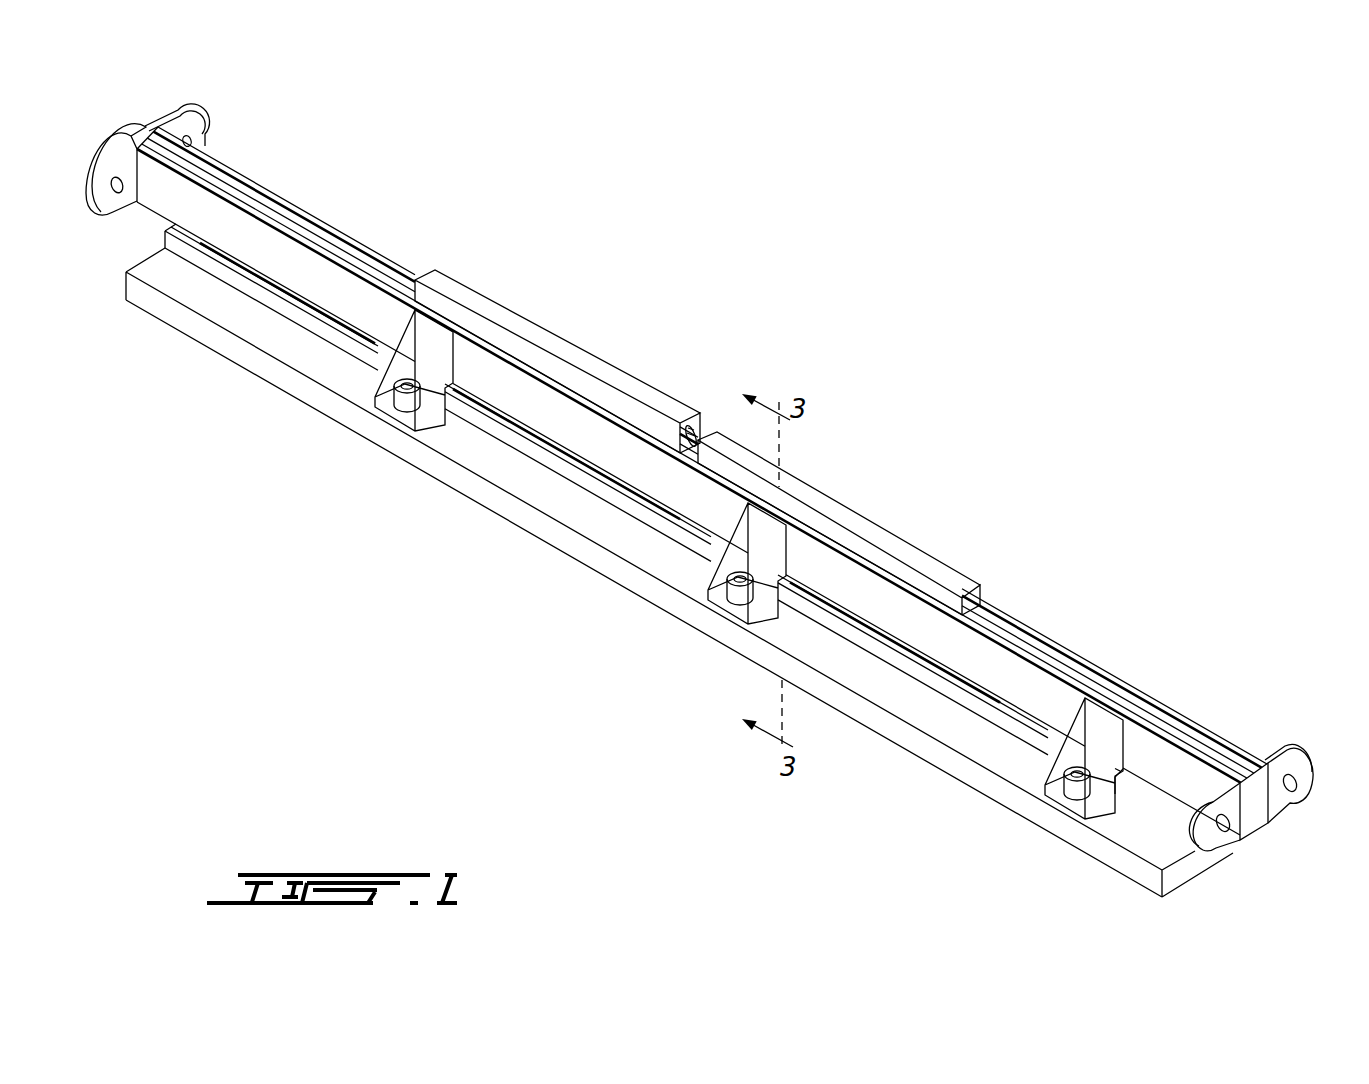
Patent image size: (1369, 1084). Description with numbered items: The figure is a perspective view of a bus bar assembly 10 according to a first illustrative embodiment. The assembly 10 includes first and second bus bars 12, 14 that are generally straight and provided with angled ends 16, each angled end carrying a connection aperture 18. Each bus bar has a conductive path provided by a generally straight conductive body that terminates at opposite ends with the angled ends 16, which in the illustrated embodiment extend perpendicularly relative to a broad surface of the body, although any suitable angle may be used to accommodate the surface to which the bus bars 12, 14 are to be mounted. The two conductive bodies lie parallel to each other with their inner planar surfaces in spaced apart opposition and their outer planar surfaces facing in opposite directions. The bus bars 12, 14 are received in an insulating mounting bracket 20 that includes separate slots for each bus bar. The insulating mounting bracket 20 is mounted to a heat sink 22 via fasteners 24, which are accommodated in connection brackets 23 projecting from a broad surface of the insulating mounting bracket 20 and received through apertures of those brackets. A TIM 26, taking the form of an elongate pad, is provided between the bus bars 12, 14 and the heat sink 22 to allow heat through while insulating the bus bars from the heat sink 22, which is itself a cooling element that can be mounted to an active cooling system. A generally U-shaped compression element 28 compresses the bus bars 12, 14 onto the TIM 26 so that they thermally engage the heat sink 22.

The bus bar assembly 10 is at (1035, 272).
The first bus bar 12 is at (270, 215).
The second bus bar 14 is at (310, 219).
The angled ends 16 is at (103, 163).
The connection apertures 18 is at (117, 186).
The insulating mounting bracket 20 is at (950, 643).
The heat sink 22 is at (607, 527).
The connection brackets 23 is at (443, 373).
The fasteners 24 is at (722, 597).
The TIM 26 is at (493, 411).
The compression element 28 is at (588, 370).